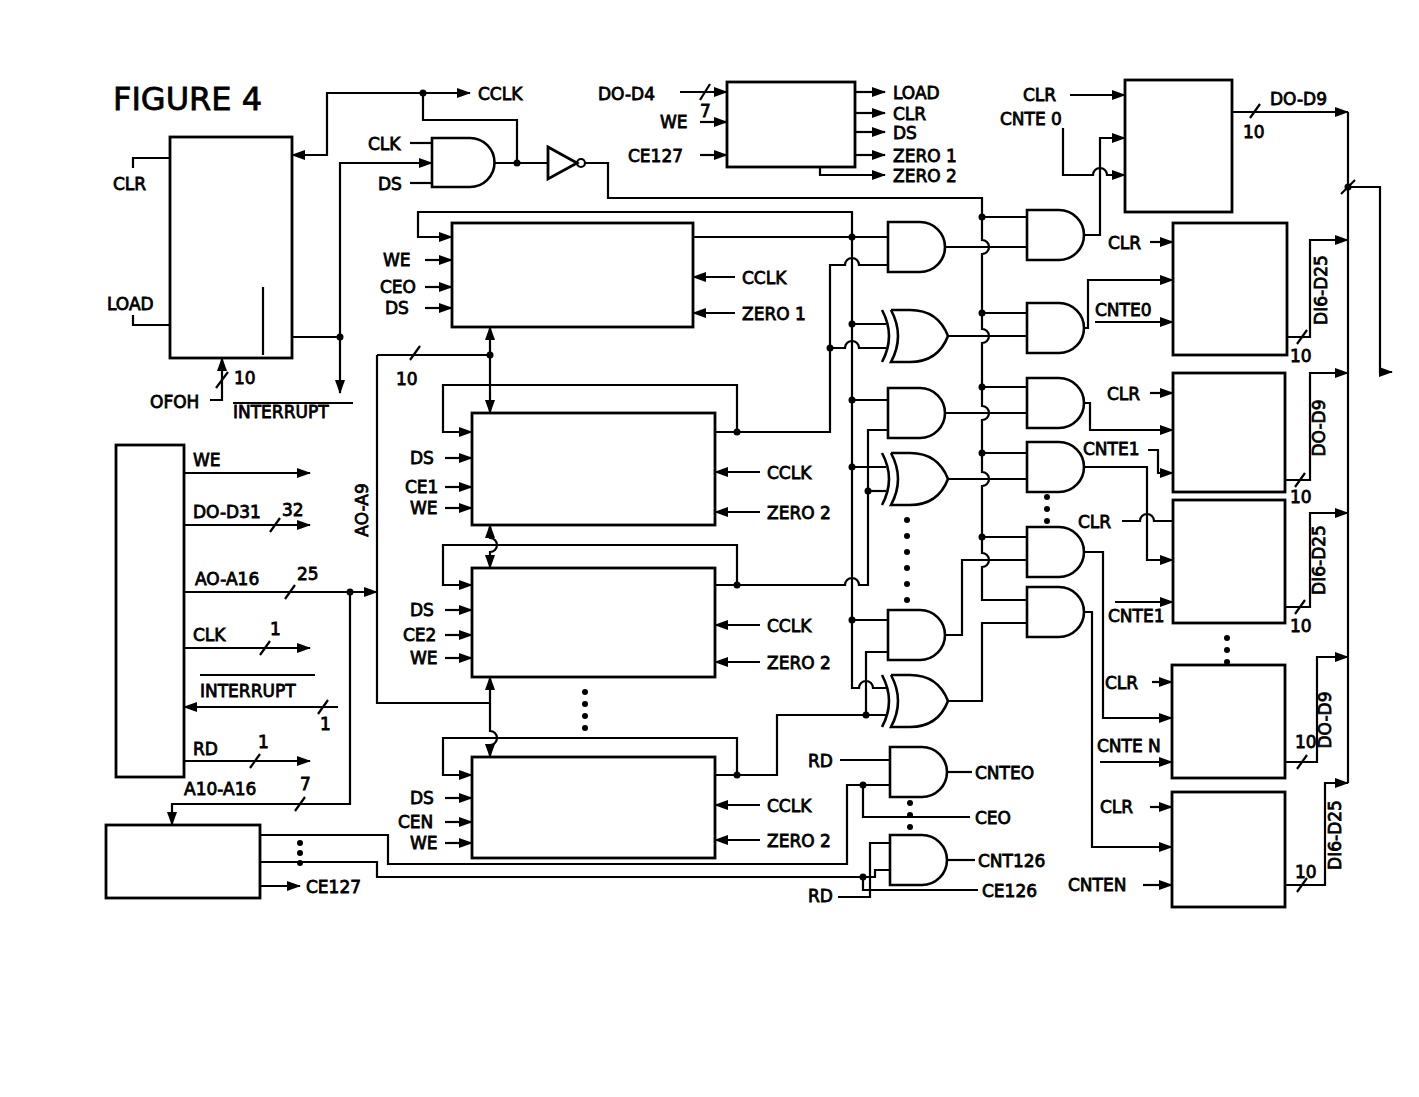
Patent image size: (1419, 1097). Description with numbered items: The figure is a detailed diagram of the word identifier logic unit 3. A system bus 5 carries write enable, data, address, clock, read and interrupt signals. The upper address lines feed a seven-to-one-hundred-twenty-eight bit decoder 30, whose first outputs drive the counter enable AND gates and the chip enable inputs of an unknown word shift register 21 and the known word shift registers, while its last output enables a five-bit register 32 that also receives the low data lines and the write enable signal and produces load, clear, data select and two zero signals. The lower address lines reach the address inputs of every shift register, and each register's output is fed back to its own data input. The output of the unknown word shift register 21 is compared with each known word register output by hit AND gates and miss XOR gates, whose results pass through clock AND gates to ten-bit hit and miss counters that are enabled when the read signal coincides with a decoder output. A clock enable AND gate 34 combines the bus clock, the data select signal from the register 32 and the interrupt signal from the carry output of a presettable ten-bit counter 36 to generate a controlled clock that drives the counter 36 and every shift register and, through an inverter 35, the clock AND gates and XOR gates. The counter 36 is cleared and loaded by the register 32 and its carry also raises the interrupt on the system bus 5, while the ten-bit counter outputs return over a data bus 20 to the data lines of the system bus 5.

The word identifier logic unit 3 is at (1368, 126).
The system bus 5 is at (145, 445).
The output bus 20 is at (1366, 447).
The unknown word shift register 21 is at (580, 327).
The 7 to 128 bit decoder 30 is at (150, 825).
The 5-bit register 32 is at (730, 167).
The clock enable AND gate 34 is at (480, 185).
The inverter 35 is at (565, 147).
The presettable 10-bit counter 36 is at (170, 355).